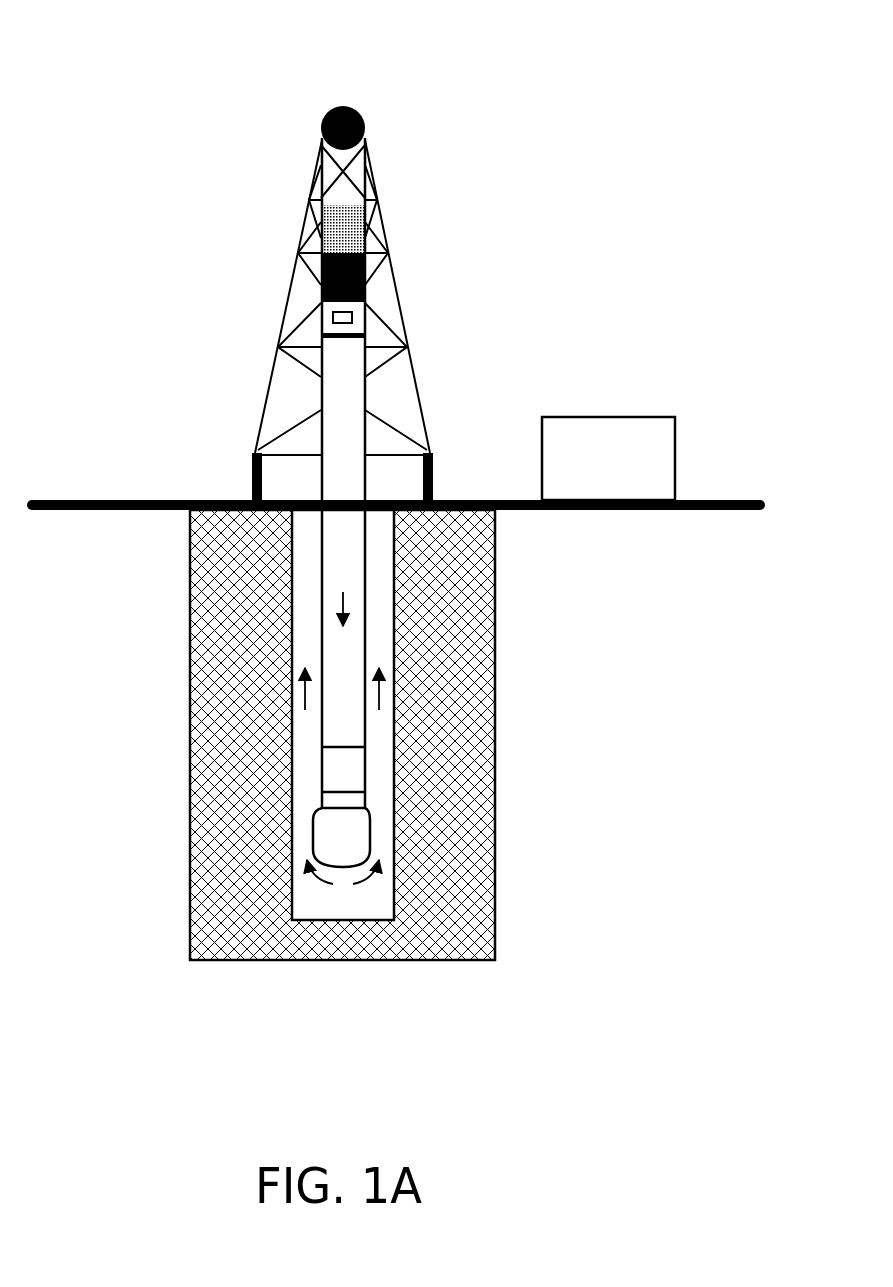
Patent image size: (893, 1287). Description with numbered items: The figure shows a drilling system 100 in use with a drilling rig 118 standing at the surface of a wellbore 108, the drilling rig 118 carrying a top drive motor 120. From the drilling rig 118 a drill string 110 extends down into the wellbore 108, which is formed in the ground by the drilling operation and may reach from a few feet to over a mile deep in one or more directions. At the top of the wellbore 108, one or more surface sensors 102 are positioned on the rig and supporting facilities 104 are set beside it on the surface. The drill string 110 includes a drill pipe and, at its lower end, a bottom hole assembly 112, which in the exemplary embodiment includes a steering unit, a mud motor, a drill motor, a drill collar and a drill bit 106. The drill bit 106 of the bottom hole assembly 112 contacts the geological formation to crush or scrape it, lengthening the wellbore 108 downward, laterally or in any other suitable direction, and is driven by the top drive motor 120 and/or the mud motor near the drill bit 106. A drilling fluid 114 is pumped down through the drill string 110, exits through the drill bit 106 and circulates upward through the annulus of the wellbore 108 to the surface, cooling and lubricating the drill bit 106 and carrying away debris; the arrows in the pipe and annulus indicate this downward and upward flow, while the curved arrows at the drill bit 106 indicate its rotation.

The drilling system 100 is at (178, 44).
The surface sensors 102 is at (352, 318).
The supporting facilities 104 is at (608, 458).
The drill bit 106 is at (370, 838).
The wellbore 108 is at (287, 557).
The drill string 110 is at (321, 393).
The bottom hole assembly 112 is at (320, 778).
The drilling fluid 114 is at (303, 737).
The drilling rig 118 is at (370, 172).
The top drive motor 120 is at (366, 268).